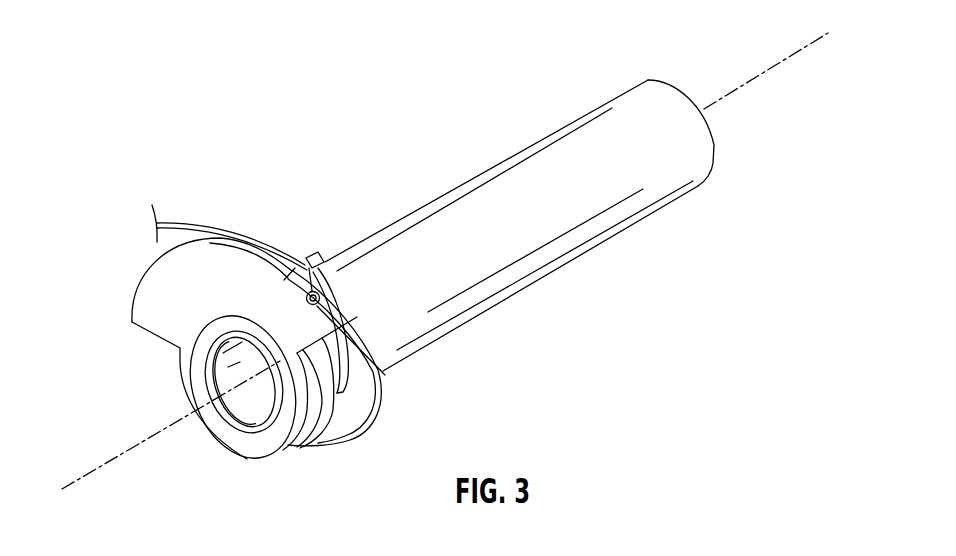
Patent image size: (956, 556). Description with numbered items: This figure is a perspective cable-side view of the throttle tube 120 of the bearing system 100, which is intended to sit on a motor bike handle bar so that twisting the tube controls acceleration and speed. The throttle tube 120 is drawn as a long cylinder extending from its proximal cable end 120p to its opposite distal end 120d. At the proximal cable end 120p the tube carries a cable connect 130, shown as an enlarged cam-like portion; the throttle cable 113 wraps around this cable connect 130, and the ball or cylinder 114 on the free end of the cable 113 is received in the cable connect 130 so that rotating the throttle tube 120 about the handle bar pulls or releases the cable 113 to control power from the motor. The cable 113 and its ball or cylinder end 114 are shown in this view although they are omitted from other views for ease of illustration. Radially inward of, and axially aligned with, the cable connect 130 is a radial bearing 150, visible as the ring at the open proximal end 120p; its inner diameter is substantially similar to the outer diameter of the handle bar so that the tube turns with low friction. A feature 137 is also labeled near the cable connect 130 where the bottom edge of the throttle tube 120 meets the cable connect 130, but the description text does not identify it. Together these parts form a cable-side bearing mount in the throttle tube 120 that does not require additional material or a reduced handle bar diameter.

The bearing system 100 is at (476, 98).
The throttle cable 113 is at (183, 223).
The ball or cylinder 114 is at (318, 253).
The throttle tube 120 is at (493, 288).
The distal end of the throttle tube 120d is at (713, 165).
The proximal cable end of the throttle tube 120p is at (250, 461).
The cable connect 130 is at (237, 285).
The slot 137 is at (384, 374).
The radial bearing 150 is at (203, 423).